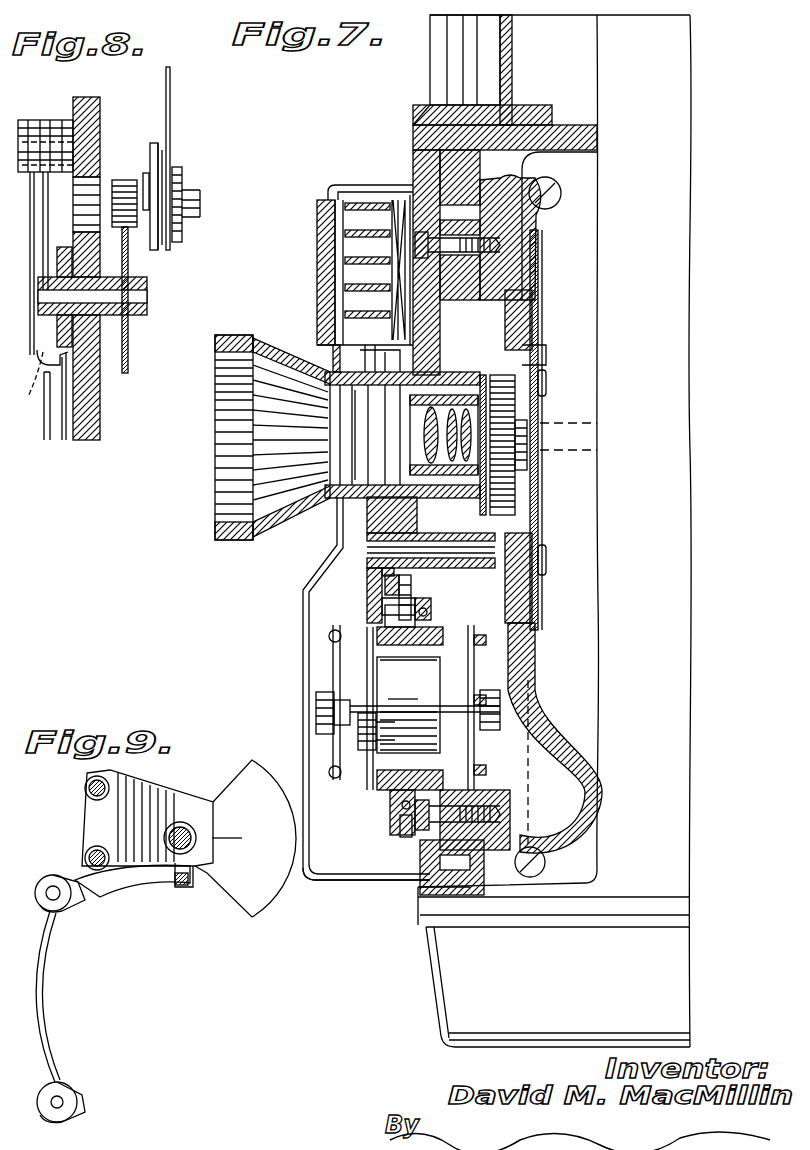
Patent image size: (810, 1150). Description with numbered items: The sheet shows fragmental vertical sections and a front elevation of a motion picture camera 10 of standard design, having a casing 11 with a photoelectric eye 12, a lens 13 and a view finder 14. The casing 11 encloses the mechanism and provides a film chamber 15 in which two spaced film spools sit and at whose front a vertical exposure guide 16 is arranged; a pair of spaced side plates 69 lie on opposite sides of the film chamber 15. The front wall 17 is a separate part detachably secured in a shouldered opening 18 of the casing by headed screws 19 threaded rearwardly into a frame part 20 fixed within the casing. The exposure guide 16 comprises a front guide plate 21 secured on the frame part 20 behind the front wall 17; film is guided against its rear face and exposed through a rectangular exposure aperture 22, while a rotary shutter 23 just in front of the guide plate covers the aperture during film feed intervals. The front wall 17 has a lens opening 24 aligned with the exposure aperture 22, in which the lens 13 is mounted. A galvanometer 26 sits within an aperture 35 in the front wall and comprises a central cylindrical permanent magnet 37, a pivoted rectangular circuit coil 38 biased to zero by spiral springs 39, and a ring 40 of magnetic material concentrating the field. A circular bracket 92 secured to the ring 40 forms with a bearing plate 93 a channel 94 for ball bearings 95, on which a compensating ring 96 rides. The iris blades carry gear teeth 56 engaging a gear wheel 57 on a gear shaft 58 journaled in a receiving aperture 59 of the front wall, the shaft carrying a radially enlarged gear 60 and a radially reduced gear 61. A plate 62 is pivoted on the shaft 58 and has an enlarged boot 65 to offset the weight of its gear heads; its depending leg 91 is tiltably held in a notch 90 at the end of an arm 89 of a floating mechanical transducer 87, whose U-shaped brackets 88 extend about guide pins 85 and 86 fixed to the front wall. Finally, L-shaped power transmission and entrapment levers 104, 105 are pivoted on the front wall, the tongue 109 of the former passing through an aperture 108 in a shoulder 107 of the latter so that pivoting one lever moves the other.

In FIG. 7, the motion picture camera 10 is at (275, 619).
In FIG. 7, the casing 11 is at (428, 1008).
In FIG. 7, the photoelectric eye 12 is at (305, 258).
In FIG. 7, the lens 13 is at (402, 434).
In FIG. 7, the view finder 14 is at (420, 72).
In FIG. 7, the film chamber 15 is at (583, 611).
In FIG. 7, the vertical exposure guide 16 is at (550, 407).
In FIG. 7, the front wall 17 is at (415, 872).
In FIG. 7, the shouldered opening 18 is at (470, 889).
In FIG. 7, the headed screws 19 is at (430, 836).
In FIG. 7, the frame part 20 is at (536, 730).
In FIG. 7, the front guide plate 21 is at (541, 512).
In FIG. 7, the exposure aperture 22 is at (536, 455).
In FIG. 7, the rotary shutter 23 is at (540, 358).
In FIG. 7, the lens opening 24 is at (410, 462).
In FIG. 7, the galvanometer 26 is at (328, 741).
In FIG. 7, the aperture 35 is at (386, 770).
In FIG. 7, the central cylindrical permanent magnet 37 is at (408, 705).
In FIG. 7, the pivoted rectangular circuit coil 38 is at (362, 752).
In FIG. 7, the spiral springs 39 is at (355, 673).
In FIG. 7, the ring of magnetic material 40 is at (365, 627).
In FIG. 7, the gear teeth 56 is at (487, 345).
In FIG. 7, the gear wheel 57 is at (430, 575).
In FIG. 7, the gear shaft 58 is at (425, 590).
In FIG. 7, the receiving aperture 59 is at (445, 534).
In FIG. 7, the radially enlarged gear 60 is at (380, 600).
In FIG. 7, the radially reduced gear 61 is at (380, 570).
In FIG. 9, the plate 62 is at (162, 820).
In FIG. 9, the enlarged boot 65 is at (262, 893).
In FIG. 7, the side plates 69 is at (585, 307).
In FIG. 9, the guide pin 85 is at (50, 885).
In FIG. 9, the guide pin 86 is at (62, 1100).
In FIG. 9, the mechanical transducer 87 is at (42, 995).
In FIG. 9, the U-shaped brackets 88 is at (45, 908).
In FIG. 9, the arm 89 is at (130, 890).
In FIG. 9, the notch 90 is at (181, 887).
In FIG. 9, the depending leg 91 is at (192, 870).
In FIG. 7, the circular bracket 92 is at (393, 812).
In FIG. 7, the bearing plate 93 is at (432, 622).
In FIG. 7, the channel 94 is at (385, 610).
In FIG. 7, the ball bearings 95 is at (402, 825).
In FIG. 7, the compensating ring 96 is at (418, 822).
In FIG. 8, the power transmission lever 104 is at (45, 195).
In FIG. 8, the entrapment lever 105 is at (65, 412).
In FIG. 8, the shoulder 107 is at (83, 360).
In FIG. 8, the aperture 108 is at (35, 386).
In FIG. 8, the tongue 109 is at (43, 405).